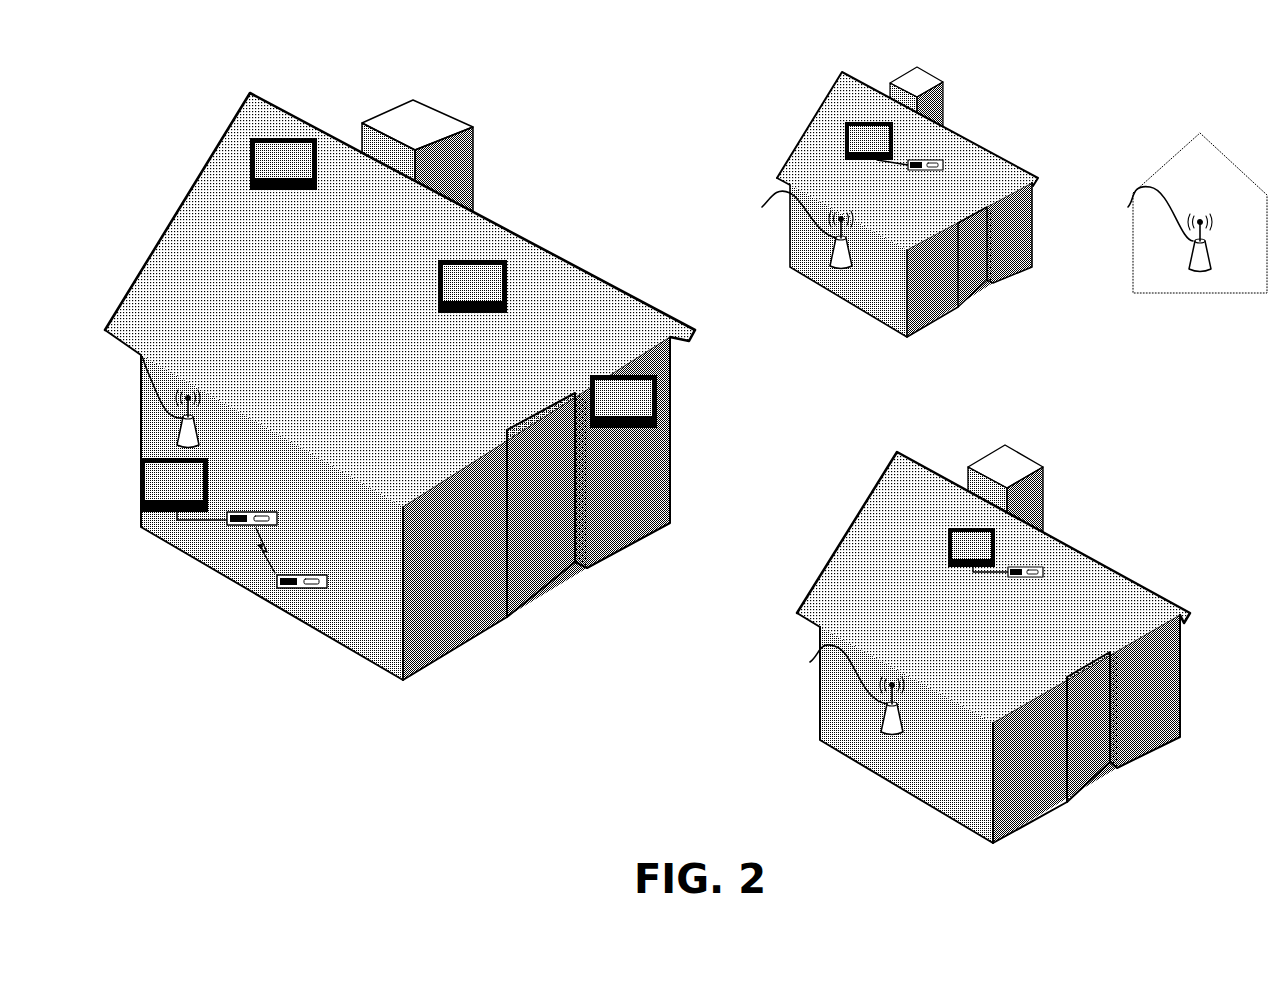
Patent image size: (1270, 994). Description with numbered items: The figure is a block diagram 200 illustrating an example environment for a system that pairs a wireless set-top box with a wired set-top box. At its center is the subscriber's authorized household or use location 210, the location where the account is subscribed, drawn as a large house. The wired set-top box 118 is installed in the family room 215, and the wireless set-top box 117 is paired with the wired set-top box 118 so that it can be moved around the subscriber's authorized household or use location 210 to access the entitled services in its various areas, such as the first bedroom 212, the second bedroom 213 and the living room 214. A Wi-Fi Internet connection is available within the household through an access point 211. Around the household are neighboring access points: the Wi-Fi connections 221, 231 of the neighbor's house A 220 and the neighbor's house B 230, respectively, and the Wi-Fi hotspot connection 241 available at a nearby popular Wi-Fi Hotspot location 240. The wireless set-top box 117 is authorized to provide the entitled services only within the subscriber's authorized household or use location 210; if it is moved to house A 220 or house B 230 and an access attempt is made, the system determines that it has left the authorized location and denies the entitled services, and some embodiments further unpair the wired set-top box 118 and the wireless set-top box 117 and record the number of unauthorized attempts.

The block diagram 200 is at (1213, 103).
The subscriber's authorized household or use location 210 is at (658, 81).
The access point 211 is at (141, 357).
The bedroom 1 212 is at (262, 239).
The bedroom 2 213 is at (466, 365).
The living room 214 is at (613, 504).
The family room 215 is at (234, 509).
The wireless set-top box 117 is at (327, 577).
The wired set-top box 118 is at (277, 513).
The neighbor's house A 220 is at (993, 337).
The Wi-Fi connection 221 is at (797, 229).
The neighbor's house B 230 is at (1094, 837).
The Wi-Fi connection 231 is at (837, 690).
The popular Wi-Fi Hotspot location 240 is at (1183, 364).
The Wi-Fi hotspot connection 241 is at (1149, 233).